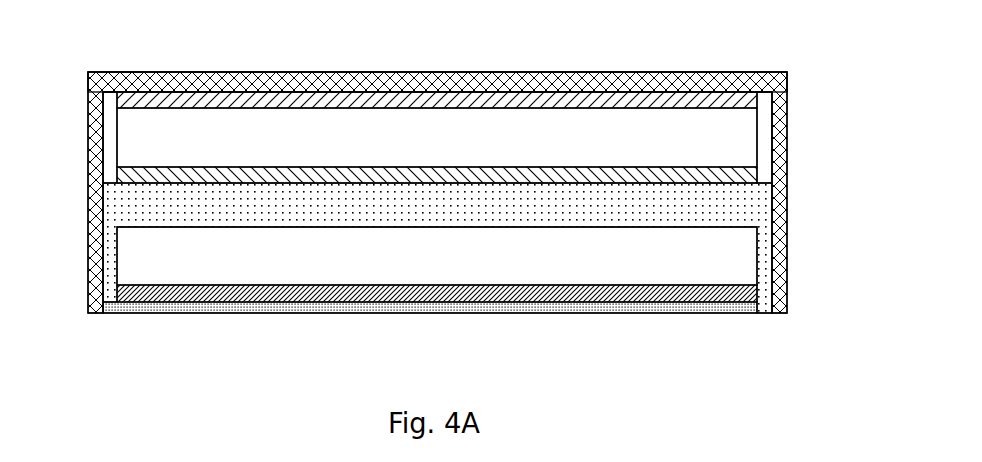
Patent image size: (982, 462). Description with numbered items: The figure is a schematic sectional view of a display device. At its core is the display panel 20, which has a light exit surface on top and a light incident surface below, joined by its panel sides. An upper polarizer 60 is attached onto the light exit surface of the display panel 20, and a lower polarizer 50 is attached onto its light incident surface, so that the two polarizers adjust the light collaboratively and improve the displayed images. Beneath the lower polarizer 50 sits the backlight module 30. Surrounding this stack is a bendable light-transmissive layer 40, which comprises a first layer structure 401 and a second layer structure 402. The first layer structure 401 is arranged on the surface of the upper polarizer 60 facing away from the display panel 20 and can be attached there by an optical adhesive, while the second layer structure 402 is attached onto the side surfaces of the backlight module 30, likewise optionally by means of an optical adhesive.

The bendable light-transmissive layer 40 is at (457, 166).
The first layer structure 401 is at (437, 63).
The second layer structure 402 is at (778, 208).
The display panel 20 is at (688, 140).
The lower polarizer 50 is at (117, 176).
The upper polarizer 60 is at (117, 101).
The backlight module 30 is at (430, 325).